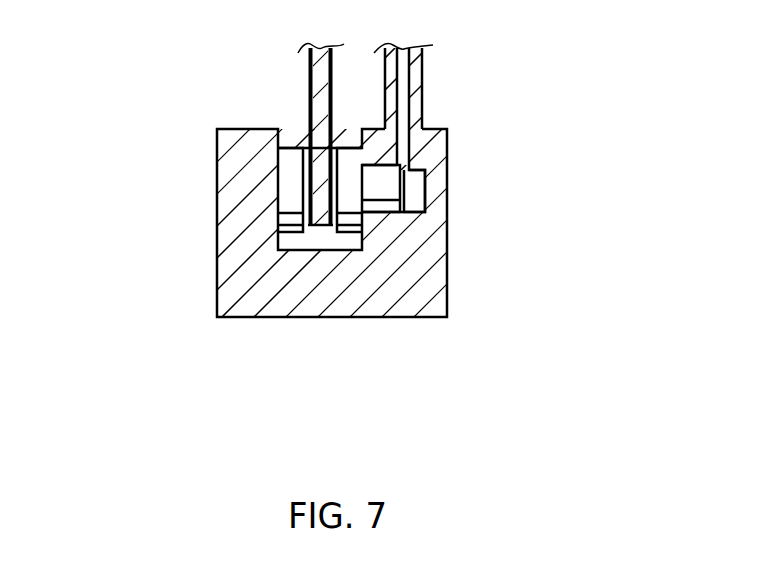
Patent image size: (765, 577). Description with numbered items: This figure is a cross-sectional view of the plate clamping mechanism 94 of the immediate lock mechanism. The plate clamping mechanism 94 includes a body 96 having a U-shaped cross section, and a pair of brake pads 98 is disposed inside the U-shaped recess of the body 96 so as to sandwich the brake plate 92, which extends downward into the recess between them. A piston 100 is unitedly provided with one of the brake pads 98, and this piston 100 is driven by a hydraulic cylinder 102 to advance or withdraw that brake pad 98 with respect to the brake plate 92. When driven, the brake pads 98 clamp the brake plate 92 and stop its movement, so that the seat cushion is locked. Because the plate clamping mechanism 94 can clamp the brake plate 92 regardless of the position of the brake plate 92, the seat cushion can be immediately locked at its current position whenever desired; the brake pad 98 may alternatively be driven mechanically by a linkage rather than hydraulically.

The brake plate 92 is at (310, 80).
The plate clamping mechanism 94 is at (357, 244).
The body 96 is at (282, 300).
The brake pads 98 is at (290, 178).
The piston 100 is at (382, 192).
The hydraulic cylinder 102 is at (410, 188).